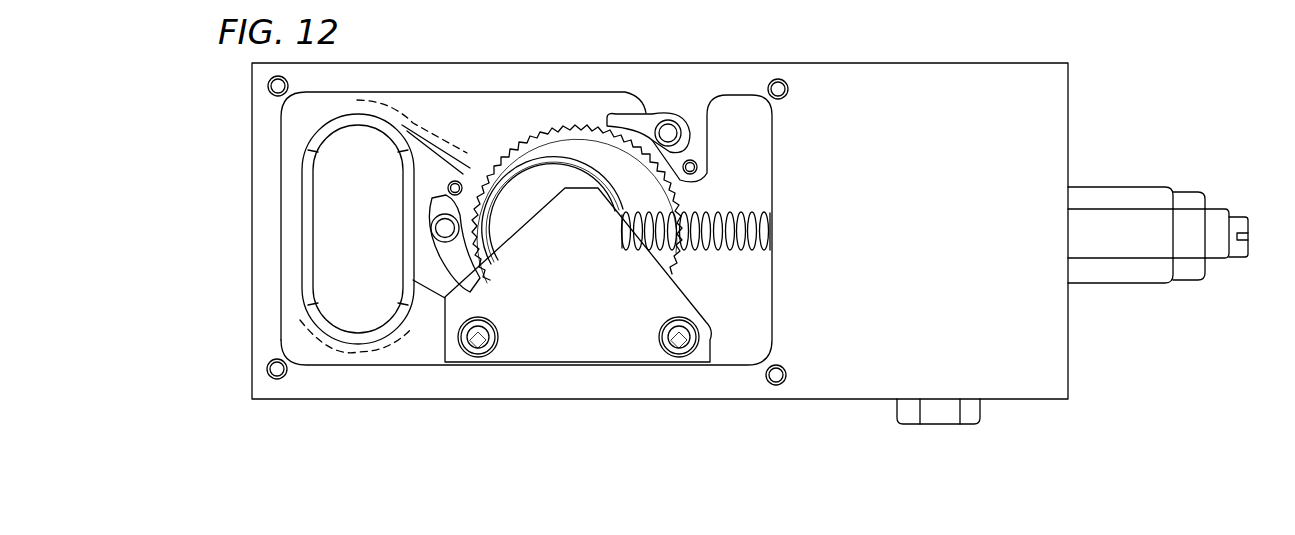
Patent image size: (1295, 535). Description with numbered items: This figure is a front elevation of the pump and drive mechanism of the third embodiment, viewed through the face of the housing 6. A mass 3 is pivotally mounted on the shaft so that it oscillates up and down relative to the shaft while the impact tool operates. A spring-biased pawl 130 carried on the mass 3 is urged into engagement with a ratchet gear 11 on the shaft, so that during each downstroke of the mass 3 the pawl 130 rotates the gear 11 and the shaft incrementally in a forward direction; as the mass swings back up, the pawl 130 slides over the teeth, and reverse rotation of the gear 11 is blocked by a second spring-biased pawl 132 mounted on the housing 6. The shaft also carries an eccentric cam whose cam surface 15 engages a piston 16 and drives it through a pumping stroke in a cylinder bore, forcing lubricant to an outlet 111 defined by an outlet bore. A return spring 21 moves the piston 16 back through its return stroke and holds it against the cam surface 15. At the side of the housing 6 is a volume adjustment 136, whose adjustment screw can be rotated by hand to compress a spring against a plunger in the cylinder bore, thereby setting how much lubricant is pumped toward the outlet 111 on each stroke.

The mass 3 is at (335, 173).
The housing 6 is at (1067, 365).
The ratchet gear 11 is at (590, 150).
The cam surface 15 is at (537, 160).
The piston 16 is at (755, 232).
The return spring 21 is at (723, 212).
The outlet 111 is at (980, 417).
The spring-biased pawl 130 is at (445, 213).
The second spring-biased pawl 132 is at (665, 117).
The volume adjustment 136 is at (1108, 182).